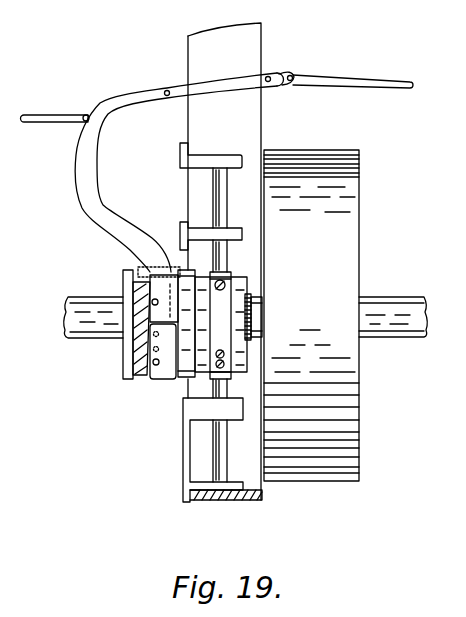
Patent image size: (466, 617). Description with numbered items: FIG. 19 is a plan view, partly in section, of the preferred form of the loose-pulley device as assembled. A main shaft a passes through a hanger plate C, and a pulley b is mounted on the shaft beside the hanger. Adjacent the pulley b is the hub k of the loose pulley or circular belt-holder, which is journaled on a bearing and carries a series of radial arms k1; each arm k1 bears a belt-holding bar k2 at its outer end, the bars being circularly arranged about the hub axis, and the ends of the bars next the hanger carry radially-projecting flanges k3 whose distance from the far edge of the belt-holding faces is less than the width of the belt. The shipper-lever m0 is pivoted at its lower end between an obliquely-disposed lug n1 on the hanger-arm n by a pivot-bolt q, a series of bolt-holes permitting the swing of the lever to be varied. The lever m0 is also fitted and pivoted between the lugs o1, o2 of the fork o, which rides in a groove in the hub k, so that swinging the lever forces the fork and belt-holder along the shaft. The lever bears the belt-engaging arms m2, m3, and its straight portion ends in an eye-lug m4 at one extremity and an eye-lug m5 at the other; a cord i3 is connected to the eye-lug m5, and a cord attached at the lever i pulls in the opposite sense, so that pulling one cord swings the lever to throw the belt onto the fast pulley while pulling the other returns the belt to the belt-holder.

The frame plate C is at (193, 120).
The shaft a is at (418, 297).
The wheel b is at (360, 418).
The hub k is at (230, 317).
The radial arms k1 is at (218, 443).
The belt-holding bar k2 is at (235, 484).
The radially-projecting flanges k3 is at (183, 498).
The hanger-arm n is at (133, 362).
The obliquely-disposed lug n1 is at (157, 376).
The pivot-bolt q is at (145, 365).
The fork o is at (187, 272).
The lug o1 is at (155, 299).
The lug o2 is at (168, 272).
The shipper-lever m0 is at (78, 170).
The belt-engaging arm m2 is at (167, 90).
The belt-engaging arm m3 is at (271, 76).
The eye-lug m4 is at (294, 74).
The eye-lug m5 is at (88, 115).
The lever i is at (337, 86).
The cord i3 is at (48, 114).